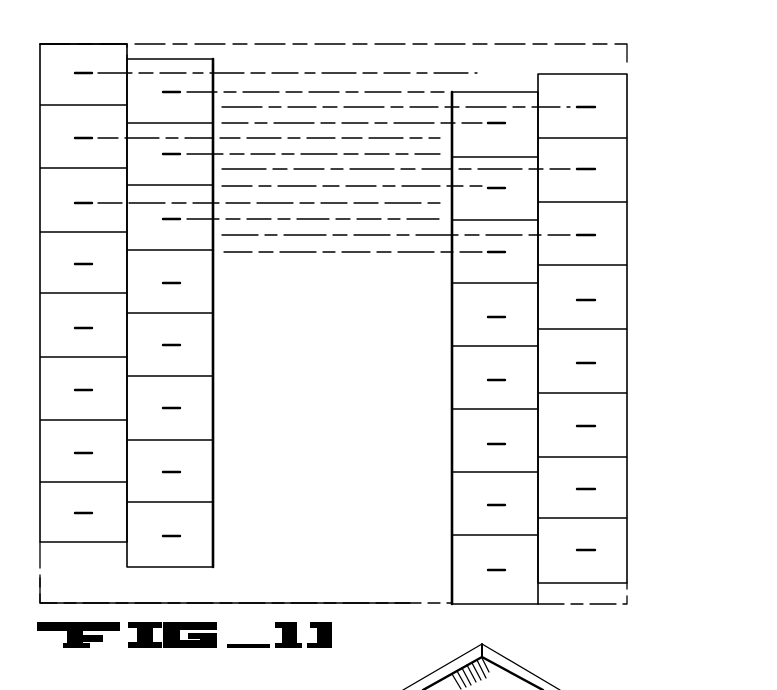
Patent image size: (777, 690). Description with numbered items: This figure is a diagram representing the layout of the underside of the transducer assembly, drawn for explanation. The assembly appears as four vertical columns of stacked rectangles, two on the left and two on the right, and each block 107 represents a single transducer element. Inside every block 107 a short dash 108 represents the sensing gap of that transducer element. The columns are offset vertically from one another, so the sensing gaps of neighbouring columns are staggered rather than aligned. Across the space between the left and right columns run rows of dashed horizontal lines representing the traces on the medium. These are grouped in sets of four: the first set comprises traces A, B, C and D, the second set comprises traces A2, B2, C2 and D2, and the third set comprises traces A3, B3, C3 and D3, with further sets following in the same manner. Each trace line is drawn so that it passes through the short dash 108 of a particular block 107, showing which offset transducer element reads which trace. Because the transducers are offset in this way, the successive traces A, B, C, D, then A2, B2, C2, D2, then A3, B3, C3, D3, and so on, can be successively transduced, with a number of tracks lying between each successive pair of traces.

The block 107 is at (195, 465).
The short dash 108 is at (586, 546).
The trace A is at (252, 73).
The trace B is at (317, 92).
The trace C is at (385, 107).
The trace D is at (430, 123).
The trace A2 is at (157, 137).
The trace B2 is at (205, 153).
The trace C2 is at (460, 170).
The trace D2 is at (357, 188).
The trace A3 is at (238, 204).
The trace B3 is at (260, 220).
The trace C3 is at (327, 236).
The trace D3 is at (370, 253).